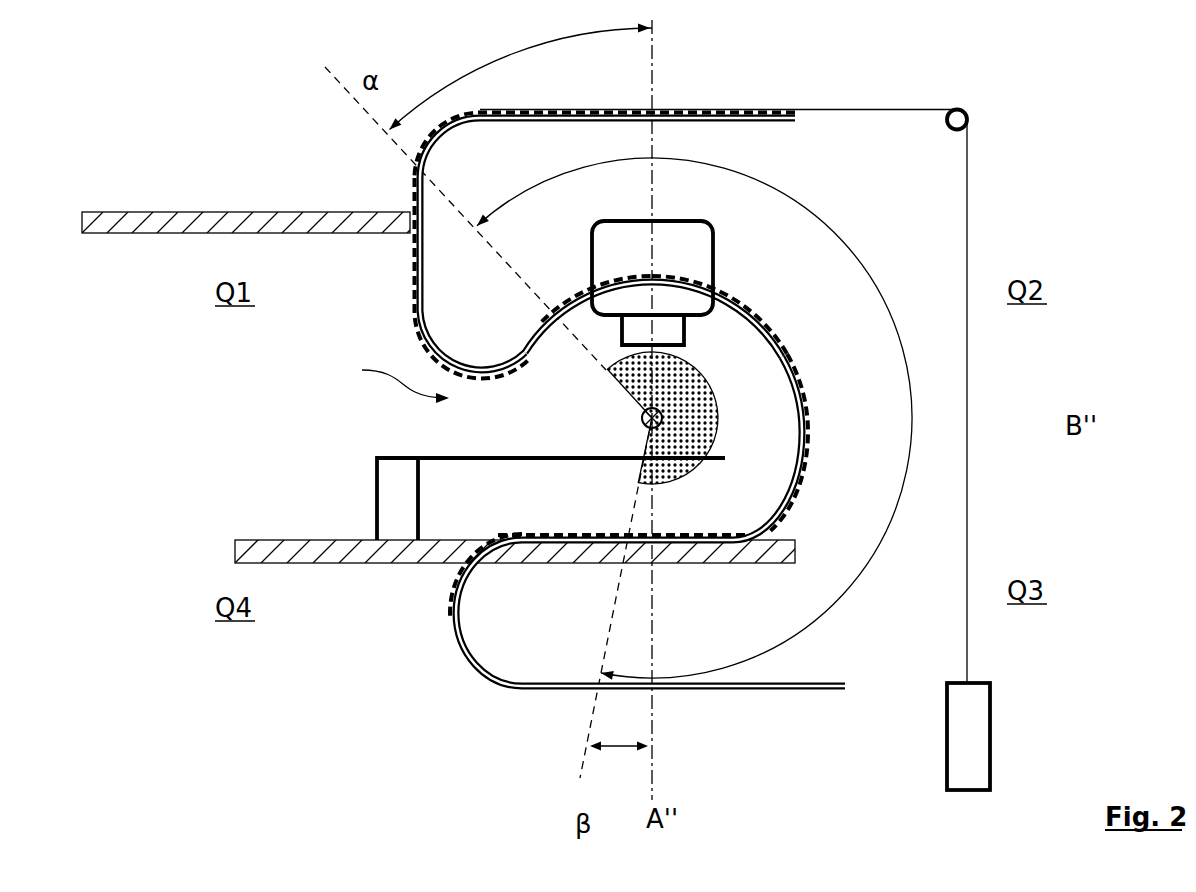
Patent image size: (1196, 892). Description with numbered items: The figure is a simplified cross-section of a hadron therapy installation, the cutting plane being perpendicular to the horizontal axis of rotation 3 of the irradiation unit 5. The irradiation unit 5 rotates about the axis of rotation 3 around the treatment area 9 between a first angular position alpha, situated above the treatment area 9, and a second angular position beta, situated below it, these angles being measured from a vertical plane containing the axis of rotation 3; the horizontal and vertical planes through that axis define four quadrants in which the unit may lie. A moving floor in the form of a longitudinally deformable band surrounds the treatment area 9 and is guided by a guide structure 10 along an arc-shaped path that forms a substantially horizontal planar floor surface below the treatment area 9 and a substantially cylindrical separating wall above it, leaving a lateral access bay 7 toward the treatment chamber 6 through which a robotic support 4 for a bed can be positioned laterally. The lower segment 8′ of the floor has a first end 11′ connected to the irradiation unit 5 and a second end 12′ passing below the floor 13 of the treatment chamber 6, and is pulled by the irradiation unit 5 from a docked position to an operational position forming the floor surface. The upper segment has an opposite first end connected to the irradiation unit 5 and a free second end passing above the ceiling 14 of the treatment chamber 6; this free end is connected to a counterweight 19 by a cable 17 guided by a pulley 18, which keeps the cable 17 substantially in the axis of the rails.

The axis of rotation 3 is at (672, 422).
The robotic support 4 is at (398, 478).
The irradiation unit 5 is at (633, 249).
The treatment chamber 6 is at (551, 400).
The lateral access bay 7 is at (393, 381).
The lower segment 8′ is at (797, 370).
The treatment area 9 is at (673, 397).
The guide structure 10 is at (767, 688).
The first end of the lower segment 11′ is at (737, 300).
The second end of the lower segment 12′ is at (457, 597).
The floor 13 is at (298, 540).
The ceiling 14 is at (255, 212).
The cable 17 is at (845, 109).
The pulley 18 is at (968, 163).
The counterweight 19 is at (957, 727).